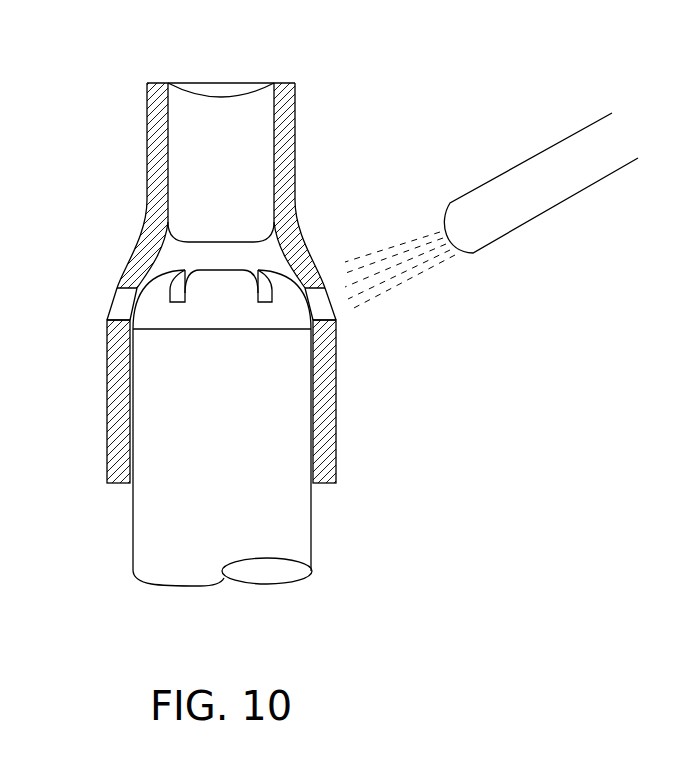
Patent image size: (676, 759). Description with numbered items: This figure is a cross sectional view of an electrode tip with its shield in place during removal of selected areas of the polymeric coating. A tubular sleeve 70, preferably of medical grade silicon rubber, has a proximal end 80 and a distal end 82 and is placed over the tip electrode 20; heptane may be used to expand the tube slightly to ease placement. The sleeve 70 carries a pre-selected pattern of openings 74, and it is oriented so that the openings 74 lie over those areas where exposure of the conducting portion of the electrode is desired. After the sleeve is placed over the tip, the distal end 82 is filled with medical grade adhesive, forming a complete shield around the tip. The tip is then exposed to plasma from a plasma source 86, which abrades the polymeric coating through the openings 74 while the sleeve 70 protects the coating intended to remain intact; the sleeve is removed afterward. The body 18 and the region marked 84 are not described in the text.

The syringe body / barrel 18 is at (133, 527).
The tip electrode 20 is at (159, 278).
The tubular sleeve 70 is at (296, 163).
The openings 74 is at (113, 303).
The proximal end 80 is at (317, 485).
The distal end 82 is at (285, 84).
The meniscus / top surface 84 is at (222, 96).
The plasma source 86 is at (510, 233).